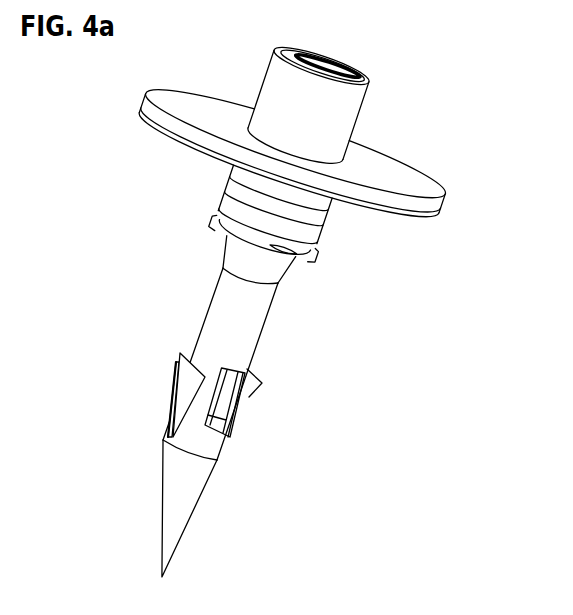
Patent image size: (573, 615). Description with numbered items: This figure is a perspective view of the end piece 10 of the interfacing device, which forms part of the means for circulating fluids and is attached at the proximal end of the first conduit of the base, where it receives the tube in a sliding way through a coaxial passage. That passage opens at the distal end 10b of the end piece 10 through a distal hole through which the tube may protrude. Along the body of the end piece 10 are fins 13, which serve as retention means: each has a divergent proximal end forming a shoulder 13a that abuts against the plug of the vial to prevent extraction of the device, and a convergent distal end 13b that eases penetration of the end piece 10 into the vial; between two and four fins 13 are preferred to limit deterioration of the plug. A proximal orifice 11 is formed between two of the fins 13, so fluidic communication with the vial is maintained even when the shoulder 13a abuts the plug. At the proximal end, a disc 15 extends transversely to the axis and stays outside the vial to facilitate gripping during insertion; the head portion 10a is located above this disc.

The end piece 10 is at (441, 106).
The head / cap portion of needle 10a is at (343, 116).
The distal end 10b is at (184, 506).
The proximal orifice 11 is at (226, 398).
The fins 13 is at (161, 374).
The shoulder 13a is at (176, 367).
The convergent distal end 13b is at (170, 406).
The disc 15 is at (192, 112).